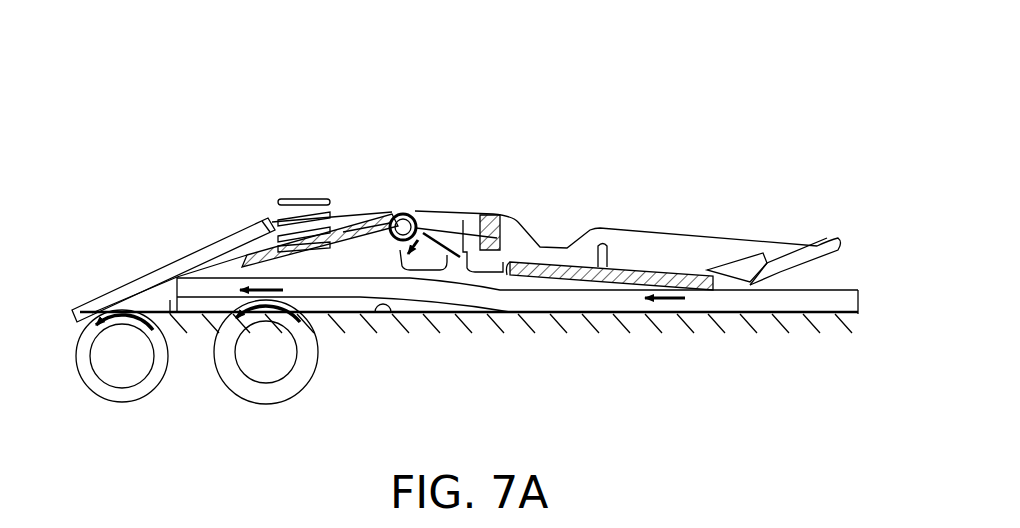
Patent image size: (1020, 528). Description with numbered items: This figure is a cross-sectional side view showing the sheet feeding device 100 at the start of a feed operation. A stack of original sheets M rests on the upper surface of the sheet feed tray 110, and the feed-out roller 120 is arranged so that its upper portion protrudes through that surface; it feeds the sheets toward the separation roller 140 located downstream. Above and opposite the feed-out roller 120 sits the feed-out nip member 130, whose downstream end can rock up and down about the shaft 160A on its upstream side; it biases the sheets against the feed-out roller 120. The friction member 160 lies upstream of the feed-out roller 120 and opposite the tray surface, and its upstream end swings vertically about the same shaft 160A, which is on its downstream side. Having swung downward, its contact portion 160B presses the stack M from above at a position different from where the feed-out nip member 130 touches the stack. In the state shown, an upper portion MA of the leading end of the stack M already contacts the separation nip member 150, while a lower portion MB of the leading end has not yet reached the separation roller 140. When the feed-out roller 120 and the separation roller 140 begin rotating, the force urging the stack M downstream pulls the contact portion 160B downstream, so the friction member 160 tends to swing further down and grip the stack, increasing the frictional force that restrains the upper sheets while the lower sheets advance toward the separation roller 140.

The sheet feeding device 100 is at (582, 88).
The sheet feed tray 110 is at (384, 320).
The feed-out roller 120 is at (288, 392).
The feed-out nip member 130 is at (270, 253).
The separation roller 140 is at (140, 392).
The separation nip member 150 is at (118, 266).
The friction member 160 is at (659, 231).
The shaft 160A is at (404, 212).
The contact portion 160B is at (699, 292).
The stacked original sheets M is at (845, 289).
The upper portion of the leading end of the stack MA is at (168, 288).
The lower portion of the leading end of the stack MB is at (170, 318).